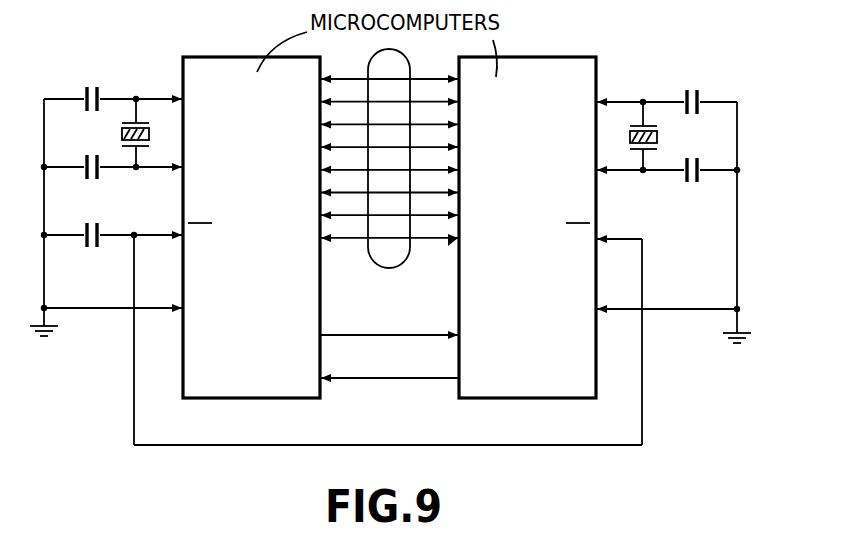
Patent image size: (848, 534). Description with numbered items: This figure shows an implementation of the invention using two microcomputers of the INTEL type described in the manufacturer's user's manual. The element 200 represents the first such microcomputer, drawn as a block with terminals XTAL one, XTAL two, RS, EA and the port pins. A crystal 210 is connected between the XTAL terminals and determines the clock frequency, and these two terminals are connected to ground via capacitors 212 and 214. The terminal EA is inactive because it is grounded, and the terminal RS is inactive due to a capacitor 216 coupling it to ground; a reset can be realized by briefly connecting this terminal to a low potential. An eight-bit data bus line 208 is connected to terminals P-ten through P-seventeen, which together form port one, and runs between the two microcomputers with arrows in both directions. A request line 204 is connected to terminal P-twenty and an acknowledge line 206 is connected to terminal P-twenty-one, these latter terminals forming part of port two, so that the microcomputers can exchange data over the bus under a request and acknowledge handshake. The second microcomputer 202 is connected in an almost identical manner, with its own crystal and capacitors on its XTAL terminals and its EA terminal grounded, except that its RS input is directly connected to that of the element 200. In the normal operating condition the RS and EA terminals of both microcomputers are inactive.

The microcomputer 200 is at (236, 385).
The second microcomputer 202 is at (533, 387).
The request line 204 is at (389, 324).
The acknowledge line 206 is at (389, 365).
The 8-bit data bus line 208 is at (389, 265).
The crystal 210 is at (117, 133).
The capacitor 212 is at (88, 84).
The capacitor 214 is at (88, 181).
The capacitor 216 is at (88, 250).